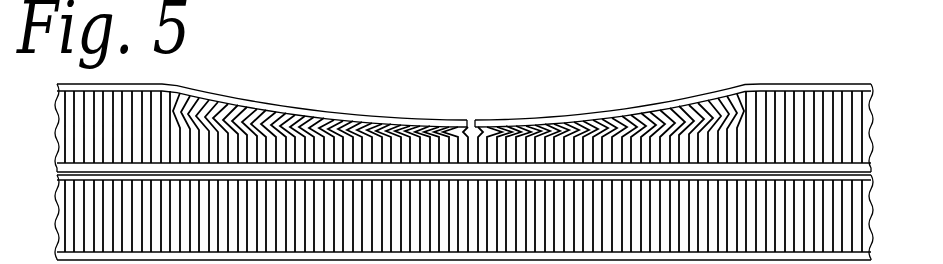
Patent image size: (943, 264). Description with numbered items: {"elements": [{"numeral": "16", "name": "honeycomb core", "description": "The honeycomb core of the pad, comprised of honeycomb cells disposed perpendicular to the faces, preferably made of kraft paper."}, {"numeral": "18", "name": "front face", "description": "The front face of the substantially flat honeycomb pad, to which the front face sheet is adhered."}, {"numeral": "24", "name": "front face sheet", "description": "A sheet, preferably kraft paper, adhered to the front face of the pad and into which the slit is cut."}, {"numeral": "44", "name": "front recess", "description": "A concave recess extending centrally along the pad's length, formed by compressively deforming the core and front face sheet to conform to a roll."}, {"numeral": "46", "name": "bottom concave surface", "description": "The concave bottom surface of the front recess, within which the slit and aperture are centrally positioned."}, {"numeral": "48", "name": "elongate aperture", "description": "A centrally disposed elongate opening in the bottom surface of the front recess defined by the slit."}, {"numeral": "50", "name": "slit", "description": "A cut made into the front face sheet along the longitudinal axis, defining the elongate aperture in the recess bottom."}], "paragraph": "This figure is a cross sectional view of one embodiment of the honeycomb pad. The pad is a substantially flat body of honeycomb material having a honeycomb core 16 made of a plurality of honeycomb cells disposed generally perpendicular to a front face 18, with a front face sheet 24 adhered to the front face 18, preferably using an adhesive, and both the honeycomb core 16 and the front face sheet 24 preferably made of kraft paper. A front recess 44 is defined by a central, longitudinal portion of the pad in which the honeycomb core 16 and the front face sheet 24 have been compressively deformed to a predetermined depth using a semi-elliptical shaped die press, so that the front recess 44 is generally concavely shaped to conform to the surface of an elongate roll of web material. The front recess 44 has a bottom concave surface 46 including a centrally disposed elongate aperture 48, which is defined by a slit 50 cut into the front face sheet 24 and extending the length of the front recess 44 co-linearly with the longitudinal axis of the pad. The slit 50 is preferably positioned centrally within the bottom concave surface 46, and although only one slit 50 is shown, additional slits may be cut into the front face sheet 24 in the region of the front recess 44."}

The fin core of upper panel 16 is at (827, 137).
The lower panel 18 is at (464, 217).
The top face sheet 24 is at (464, 67).
The right face sheet portion 44 is at (532, 119).
The left face sheet portion 46 is at (325, 111).
The gap between face sheet portions 48 is at (470, 118).
The face sheet edge 50 is at (467, 120).